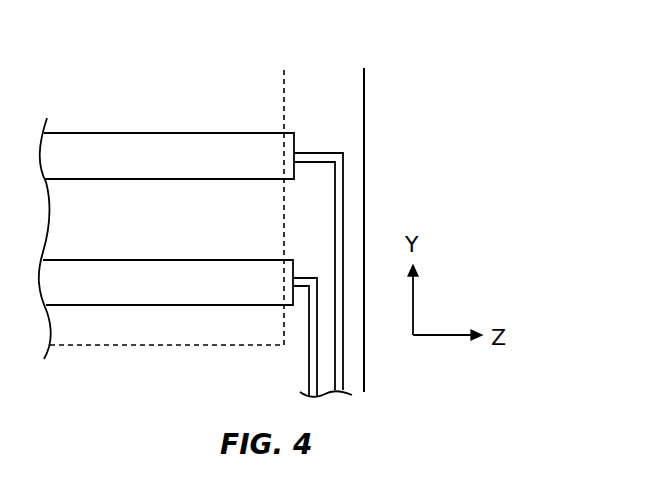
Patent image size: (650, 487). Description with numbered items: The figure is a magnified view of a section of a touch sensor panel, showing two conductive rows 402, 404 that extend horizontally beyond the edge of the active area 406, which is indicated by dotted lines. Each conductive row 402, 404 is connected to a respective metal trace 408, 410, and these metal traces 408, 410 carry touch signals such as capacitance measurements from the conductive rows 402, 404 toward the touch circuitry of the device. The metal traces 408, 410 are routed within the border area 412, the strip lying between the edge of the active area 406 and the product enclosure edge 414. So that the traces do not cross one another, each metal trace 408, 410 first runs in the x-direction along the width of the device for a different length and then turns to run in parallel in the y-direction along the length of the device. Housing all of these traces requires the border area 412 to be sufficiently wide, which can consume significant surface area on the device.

The conductive row 402 is at (163, 134).
The conductive row 404 is at (160, 260).
The active area 406 is at (285, 109).
The metal trace 408 is at (345, 177).
The metal trace 410 is at (317, 353).
The border area 412 is at (337, 136).
The product enclosure edge 414 is at (370, 210).